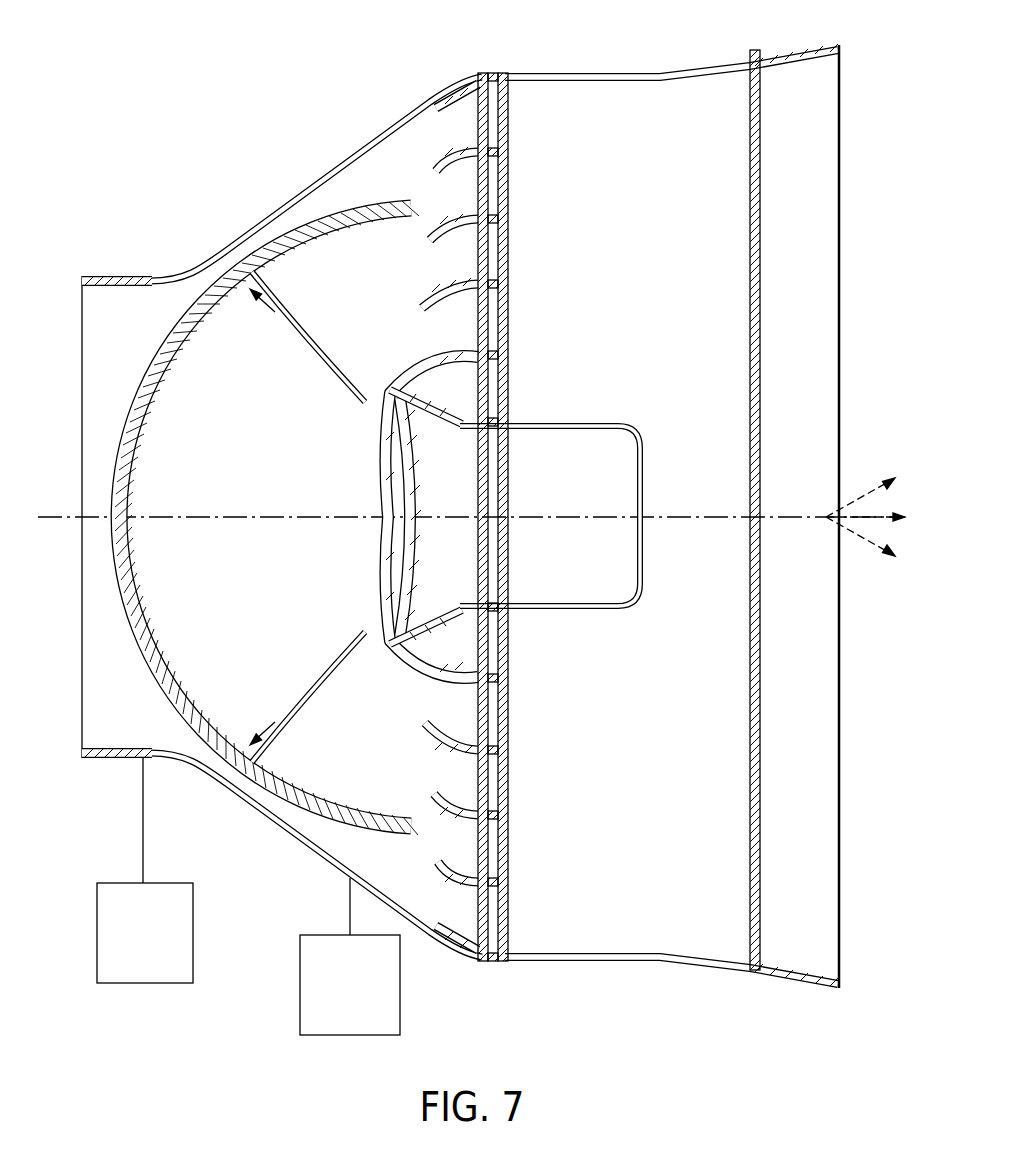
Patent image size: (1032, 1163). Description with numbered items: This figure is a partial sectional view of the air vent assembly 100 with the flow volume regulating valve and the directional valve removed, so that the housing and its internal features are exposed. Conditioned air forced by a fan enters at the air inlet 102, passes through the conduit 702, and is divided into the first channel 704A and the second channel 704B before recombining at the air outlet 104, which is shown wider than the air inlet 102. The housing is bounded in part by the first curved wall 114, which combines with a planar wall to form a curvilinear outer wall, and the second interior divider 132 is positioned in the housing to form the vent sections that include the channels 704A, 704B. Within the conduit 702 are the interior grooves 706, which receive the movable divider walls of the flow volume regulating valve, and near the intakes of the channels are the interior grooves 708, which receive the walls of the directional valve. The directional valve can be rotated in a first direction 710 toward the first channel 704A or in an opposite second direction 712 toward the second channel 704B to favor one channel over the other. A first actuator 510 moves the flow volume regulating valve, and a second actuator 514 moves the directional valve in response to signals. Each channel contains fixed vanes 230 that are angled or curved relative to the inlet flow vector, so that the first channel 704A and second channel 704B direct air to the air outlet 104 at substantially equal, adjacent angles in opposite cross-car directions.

The air vent assembly 100 is at (195, 146).
The air inlet 102 is at (97, 432).
The air outlet 104 is at (832, 376).
The first curved wall 114 is at (757, 820).
The second interior divider 132 is at (576, 440).
The fixed vanes 230 is at (442, 70).
The first actuator 510 is at (128, 948).
The second actuator 514 is at (333, 1000).
The conduit 702 is at (140, 345).
The first channel 704A is at (335, 287).
The second channel 704B is at (335, 765).
The interior grooves 706 is at (208, 745).
The interior grooves 708 is at (290, 737).
The first direction 710 is at (226, 345).
The second direction 712 is at (226, 712).